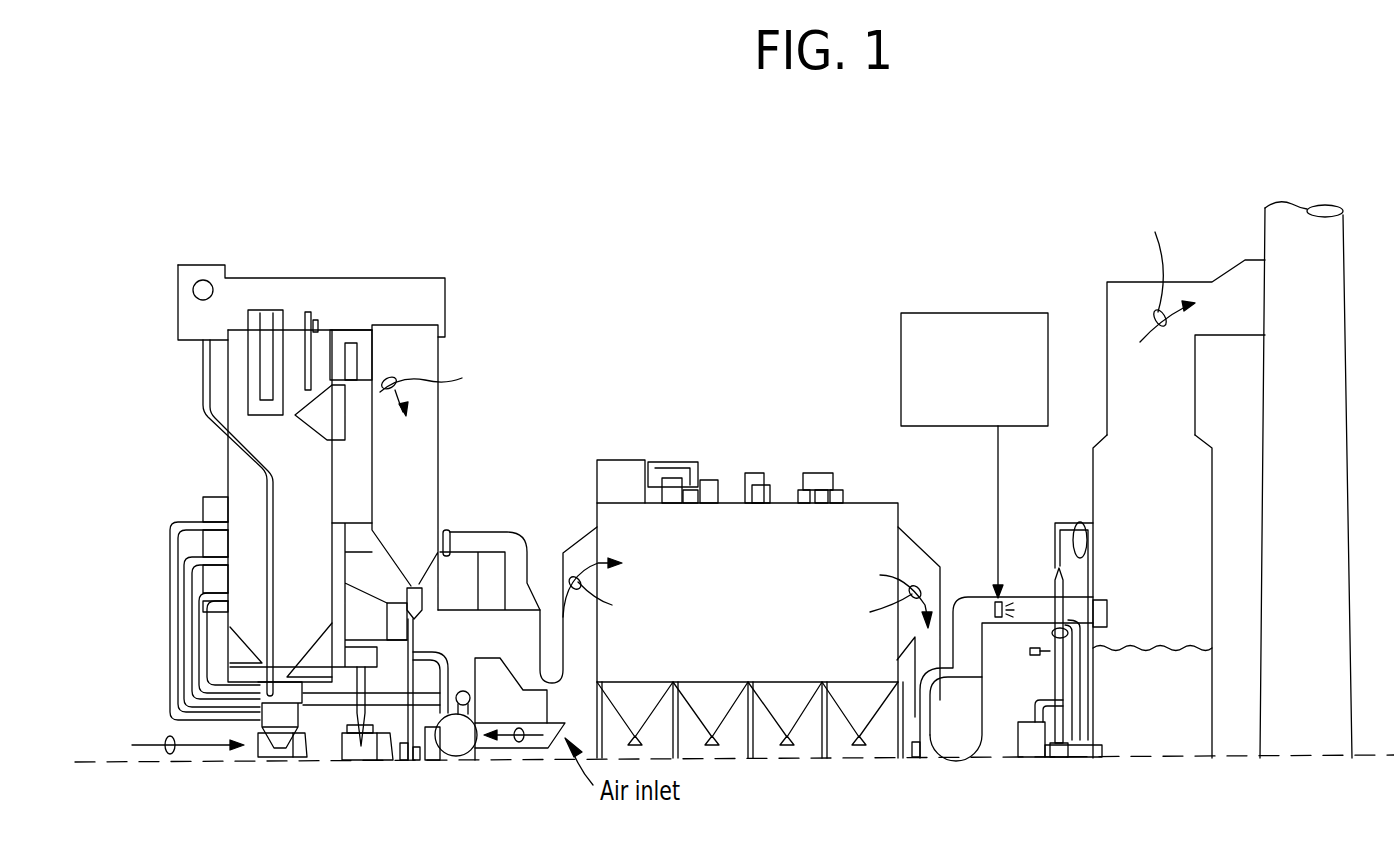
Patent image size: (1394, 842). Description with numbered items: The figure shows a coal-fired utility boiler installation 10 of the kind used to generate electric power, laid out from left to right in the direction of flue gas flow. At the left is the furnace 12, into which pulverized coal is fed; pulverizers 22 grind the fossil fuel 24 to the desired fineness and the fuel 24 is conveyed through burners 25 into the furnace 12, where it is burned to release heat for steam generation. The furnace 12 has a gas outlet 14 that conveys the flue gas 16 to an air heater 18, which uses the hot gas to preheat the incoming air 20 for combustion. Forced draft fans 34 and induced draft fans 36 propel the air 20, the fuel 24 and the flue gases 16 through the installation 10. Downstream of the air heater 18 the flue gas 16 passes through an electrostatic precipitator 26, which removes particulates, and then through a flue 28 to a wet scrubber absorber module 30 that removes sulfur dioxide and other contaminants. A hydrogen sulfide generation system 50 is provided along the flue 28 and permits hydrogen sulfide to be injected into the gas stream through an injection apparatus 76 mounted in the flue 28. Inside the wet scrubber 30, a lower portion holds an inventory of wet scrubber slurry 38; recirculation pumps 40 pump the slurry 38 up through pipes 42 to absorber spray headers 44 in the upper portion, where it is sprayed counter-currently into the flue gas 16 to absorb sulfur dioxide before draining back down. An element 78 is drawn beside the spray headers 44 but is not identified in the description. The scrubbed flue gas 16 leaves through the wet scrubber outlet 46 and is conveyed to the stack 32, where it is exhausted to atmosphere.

The boiler installation 10 is at (512, 190).
The furnace 12 is at (290, 558).
The gas outlet 14 is at (392, 462).
The flue gas 16 is at (787, 416).
The air heater 18 is at (487, 648).
The incoming air 20 is at (524, 742).
The pulverizers 22 is at (345, 755).
The fossil fuel 24 is at (165, 737).
The burners 25 is at (211, 594).
The electrostatic precipitator 26 is at (717, 655).
The flue 28 is at (970, 612).
The wet scrubber absorber module 30 is at (1127, 623).
The stack 32 is at (1292, 630).
The forced draft fans 34 is at (460, 740).
The induced draft fans 36 is at (956, 740).
The wet scrubber slurry 38 is at (1132, 690).
The recirculation pumps 40 is at (1033, 742).
The pipes 42 is at (1052, 633).
The absorber spray headers 44 is at (1082, 580).
The wet scrubber outlet 46 is at (1123, 290).
The hydrogen sulfide generation system 50 is at (941, 325).
The injection apparatus 76 is at (1022, 578).
The sensor loop 78 is at (1073, 540).